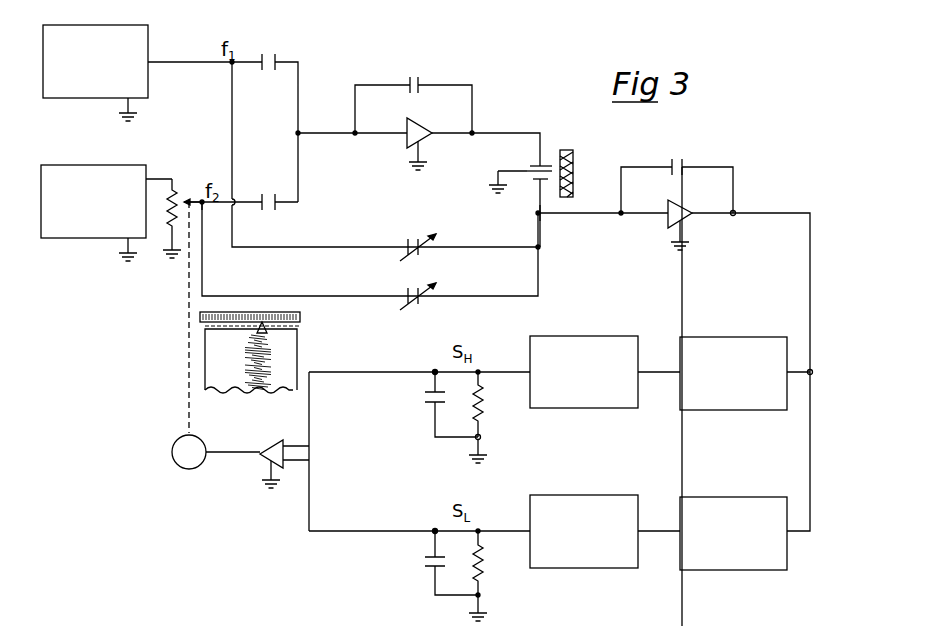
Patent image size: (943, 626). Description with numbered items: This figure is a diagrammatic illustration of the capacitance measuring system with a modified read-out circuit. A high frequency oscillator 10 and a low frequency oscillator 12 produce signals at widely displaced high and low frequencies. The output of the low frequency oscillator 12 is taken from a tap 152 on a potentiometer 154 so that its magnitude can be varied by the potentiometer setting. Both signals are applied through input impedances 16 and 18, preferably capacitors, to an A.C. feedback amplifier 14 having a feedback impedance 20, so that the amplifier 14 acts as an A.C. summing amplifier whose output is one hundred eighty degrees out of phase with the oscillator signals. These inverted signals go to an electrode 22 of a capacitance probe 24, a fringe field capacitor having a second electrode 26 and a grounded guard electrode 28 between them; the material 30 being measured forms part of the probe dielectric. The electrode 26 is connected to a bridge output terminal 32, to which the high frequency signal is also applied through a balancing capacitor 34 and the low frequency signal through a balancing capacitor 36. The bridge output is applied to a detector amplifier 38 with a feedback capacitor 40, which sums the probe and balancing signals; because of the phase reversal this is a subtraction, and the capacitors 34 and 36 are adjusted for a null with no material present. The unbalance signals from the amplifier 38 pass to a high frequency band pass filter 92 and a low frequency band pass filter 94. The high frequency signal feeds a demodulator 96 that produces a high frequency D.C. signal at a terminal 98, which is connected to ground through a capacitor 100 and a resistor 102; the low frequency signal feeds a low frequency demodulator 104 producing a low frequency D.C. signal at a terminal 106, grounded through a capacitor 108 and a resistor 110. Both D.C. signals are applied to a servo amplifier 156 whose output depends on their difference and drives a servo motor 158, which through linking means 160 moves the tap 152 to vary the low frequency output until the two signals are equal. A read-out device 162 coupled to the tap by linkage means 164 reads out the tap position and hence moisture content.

The high frequency oscillator 10 is at (128, 25).
The low frequency oscillator 12 is at (118, 165).
The A.C. feedback amplifier 14 is at (424, 127).
The input impedance 16 is at (276, 57).
The input impedance 18 is at (273, 199).
The feedback impedance 20 is at (419, 80).
The electrode 22 is at (538, 164).
The capacitance probe 24 is at (548, 158).
The electrode 26 is at (538, 181).
The grounded guard electrode 28 is at (527, 170).
The material 30 is at (573, 157).
The bridge output terminal 32 is at (537, 214).
The balancing capacitor 34 is at (405, 245).
The balancing capacitor 36 is at (405, 294).
The detector amplifier 38 is at (684, 207).
The feedback capacitor 40 is at (683, 163).
The high frequency band pass filter 92 is at (750, 337).
The low frequency band pass filter 94 is at (750, 497).
The demodulator 96 is at (606, 336).
The terminal 98 is at (447, 356).
The capacitor 100 is at (432, 402).
The resistor 102 is at (483, 393).
The low frequency demodulator 104 is at (606, 495).
The terminal 106 is at (447, 515).
The capacitor 108 is at (433, 567).
The resistor 110 is at (483, 553).
The tap 152 is at (199, 199).
The potentiometer 154 is at (176, 195).
The servo amplifier 156 is at (268, 446).
The servo motor 158 is at (172, 452).
The linking means 160 is at (189, 358).
The read-out device 162 is at (290, 336).
The linkage means 164 is at (193, 327).